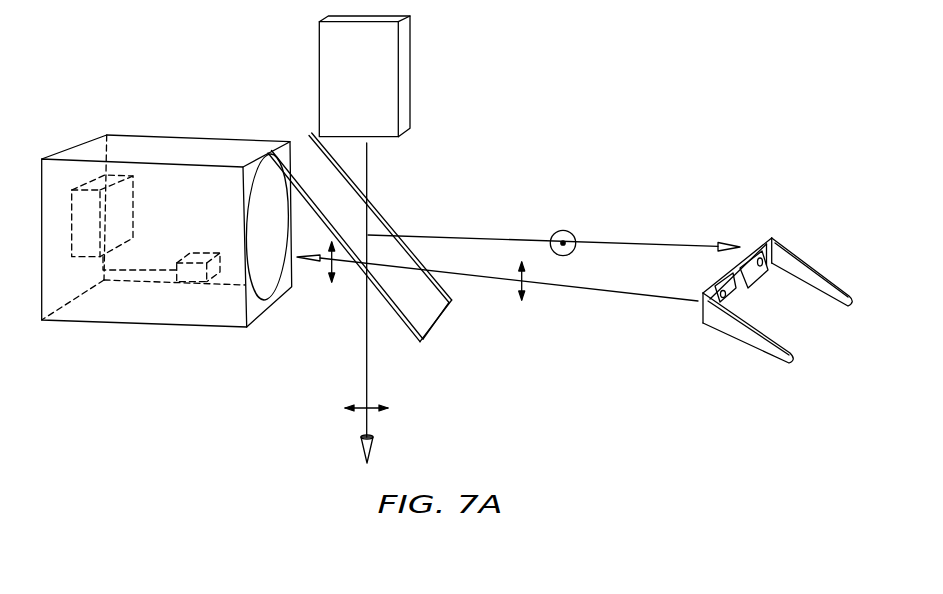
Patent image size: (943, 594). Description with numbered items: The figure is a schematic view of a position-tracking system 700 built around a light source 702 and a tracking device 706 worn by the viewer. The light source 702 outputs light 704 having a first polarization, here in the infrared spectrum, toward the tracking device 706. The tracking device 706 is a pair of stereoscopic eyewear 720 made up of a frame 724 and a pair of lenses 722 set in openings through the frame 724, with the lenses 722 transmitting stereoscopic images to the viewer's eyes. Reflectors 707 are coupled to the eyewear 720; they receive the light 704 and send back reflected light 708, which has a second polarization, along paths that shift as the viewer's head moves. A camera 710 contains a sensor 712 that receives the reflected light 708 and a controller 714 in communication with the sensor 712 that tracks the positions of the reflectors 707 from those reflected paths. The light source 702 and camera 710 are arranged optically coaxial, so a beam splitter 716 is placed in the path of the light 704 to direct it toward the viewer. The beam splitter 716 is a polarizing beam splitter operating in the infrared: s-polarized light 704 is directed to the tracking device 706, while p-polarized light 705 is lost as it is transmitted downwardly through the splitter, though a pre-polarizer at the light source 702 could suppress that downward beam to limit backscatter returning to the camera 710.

The position-tracking system 700 is at (85, 386).
The light source 702 is at (319, 59).
The light 704 is at (633, 242).
The p-polarized light 705 is at (367, 362).
The tracking device 706 is at (735, 353).
The reflectors 707 is at (723, 296).
The reflected light 708 is at (577, 290).
The camera 710 is at (73, 147).
The sensor 712 is at (135, 197).
The controller 714 is at (208, 253).
The beam splitter 716 is at (428, 312).
The stereoscopic eyewear 720 is at (816, 238).
The lenses 722 is at (728, 283).
The frame 724 is at (703, 315).